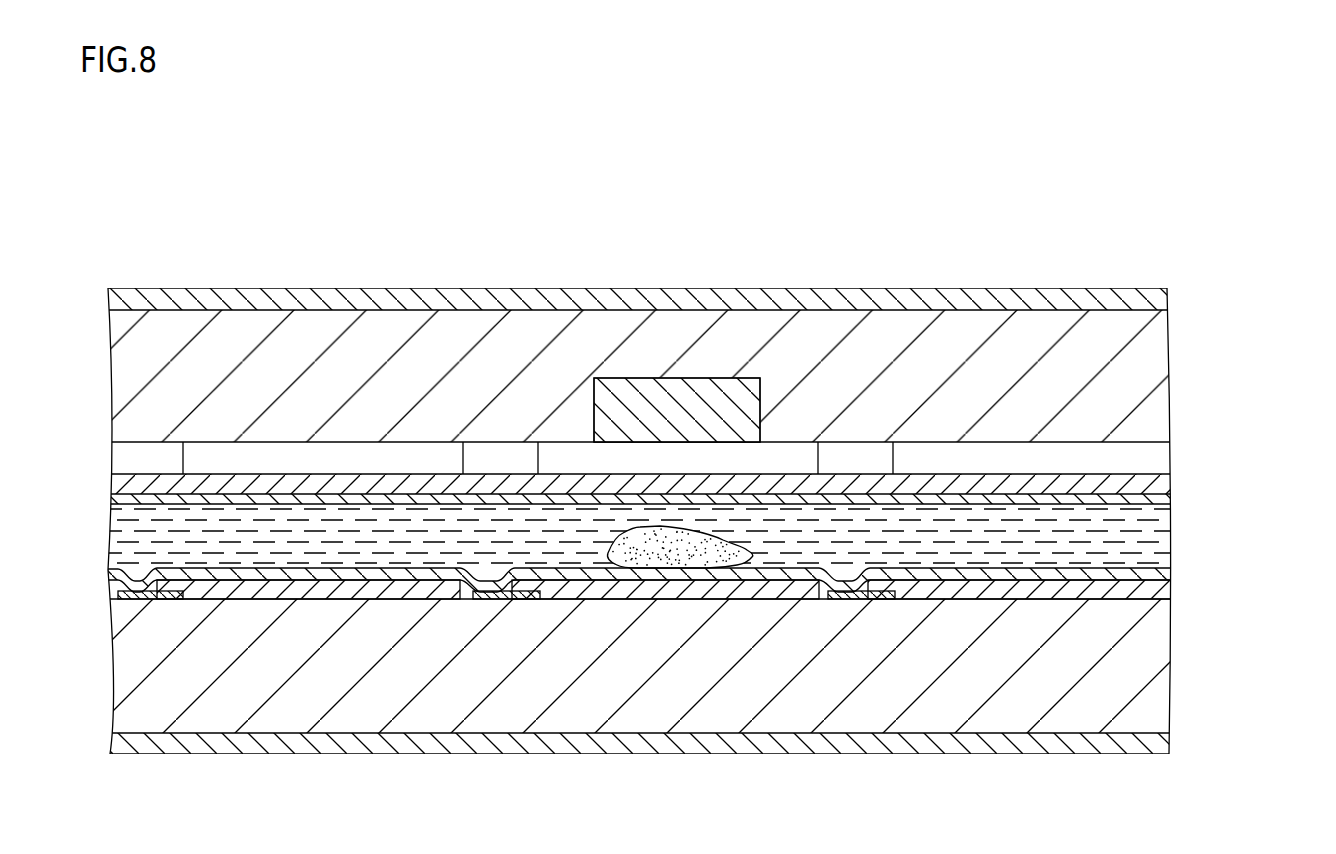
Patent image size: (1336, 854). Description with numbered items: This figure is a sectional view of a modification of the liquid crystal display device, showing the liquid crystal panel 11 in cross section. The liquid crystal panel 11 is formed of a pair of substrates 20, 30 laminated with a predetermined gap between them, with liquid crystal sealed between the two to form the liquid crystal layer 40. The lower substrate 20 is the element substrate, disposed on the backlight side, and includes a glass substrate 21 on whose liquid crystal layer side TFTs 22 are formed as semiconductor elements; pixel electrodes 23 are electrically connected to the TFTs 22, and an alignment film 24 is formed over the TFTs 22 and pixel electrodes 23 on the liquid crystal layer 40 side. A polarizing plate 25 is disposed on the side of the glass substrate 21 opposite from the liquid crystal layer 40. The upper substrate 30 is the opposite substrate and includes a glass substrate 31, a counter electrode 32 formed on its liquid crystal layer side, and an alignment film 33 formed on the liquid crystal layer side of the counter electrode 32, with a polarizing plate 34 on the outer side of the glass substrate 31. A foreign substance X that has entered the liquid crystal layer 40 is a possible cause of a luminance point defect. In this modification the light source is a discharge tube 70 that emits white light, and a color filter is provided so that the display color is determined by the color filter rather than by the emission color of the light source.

The liquid crystal panel 11 is at (704, 504).
The substrate 20 is at (704, 689).
The glass substrate 21 is at (1148, 707).
The TFT 22 is at (882, 595).
The pixel electrode 23 is at (1078, 587).
The alignment film 24 is at (1145, 573).
The polarizing plate 25 is at (678, 751).
The substrate 30 is at (704, 396).
The glass substrate 31 is at (1145, 385).
The counter electrode 32 is at (1153, 483).
The alignment film 33 is at (678, 491).
The polarizing plate 34 is at (1147, 299).
The liquid crystal layer 40 is at (1132, 535).
The discharge tube 70 is at (1153, 455).
The foreign substance X is at (635, 555).